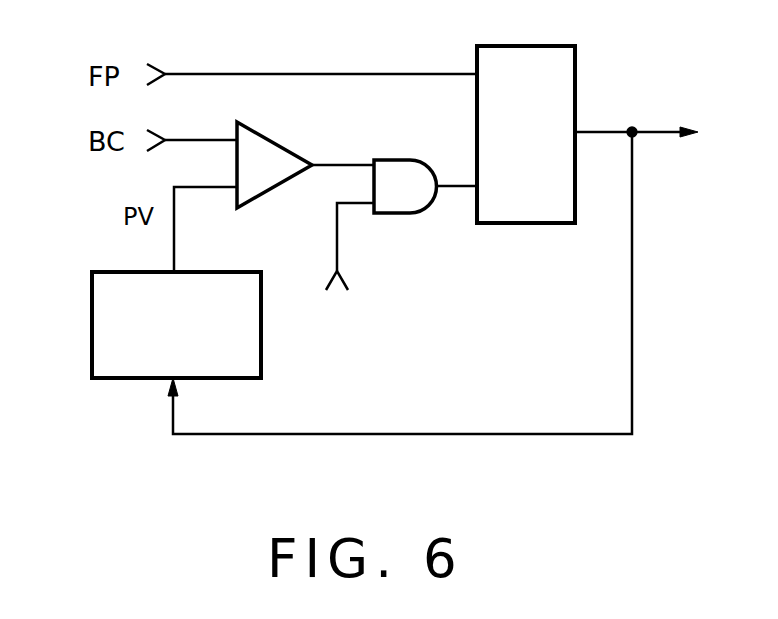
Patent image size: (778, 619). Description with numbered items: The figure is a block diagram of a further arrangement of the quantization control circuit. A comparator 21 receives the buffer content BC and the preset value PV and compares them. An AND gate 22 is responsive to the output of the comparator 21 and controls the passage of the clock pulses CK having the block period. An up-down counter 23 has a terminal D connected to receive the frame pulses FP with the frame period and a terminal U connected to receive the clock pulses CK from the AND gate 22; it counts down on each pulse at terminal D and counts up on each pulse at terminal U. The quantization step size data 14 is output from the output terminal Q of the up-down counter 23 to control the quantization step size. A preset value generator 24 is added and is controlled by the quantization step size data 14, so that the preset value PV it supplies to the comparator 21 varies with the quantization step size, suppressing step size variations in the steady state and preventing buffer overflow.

The quantization step size data 14 is at (664, 128).
The comparator 21 is at (278, 142).
The AND gate 22 is at (396, 157).
The up-down counter 23 is at (515, 46).
The preset value generator 24 is at (92, 335).